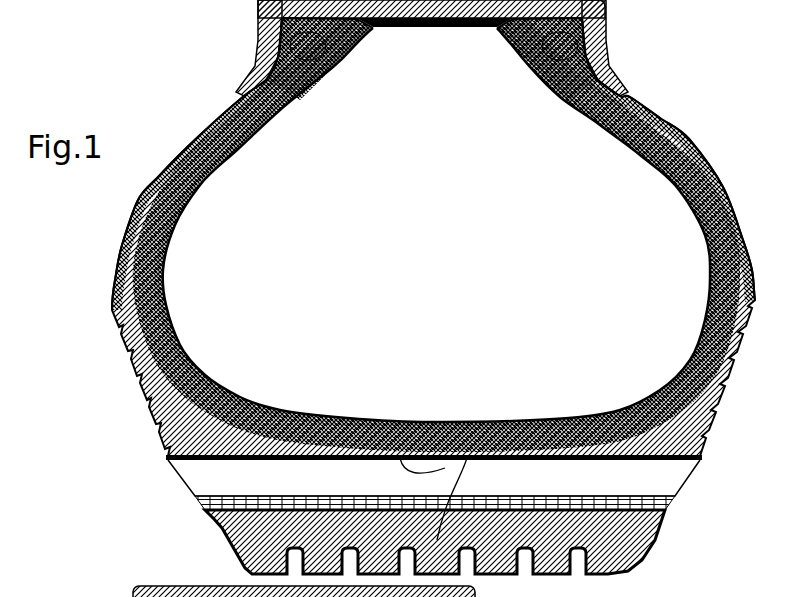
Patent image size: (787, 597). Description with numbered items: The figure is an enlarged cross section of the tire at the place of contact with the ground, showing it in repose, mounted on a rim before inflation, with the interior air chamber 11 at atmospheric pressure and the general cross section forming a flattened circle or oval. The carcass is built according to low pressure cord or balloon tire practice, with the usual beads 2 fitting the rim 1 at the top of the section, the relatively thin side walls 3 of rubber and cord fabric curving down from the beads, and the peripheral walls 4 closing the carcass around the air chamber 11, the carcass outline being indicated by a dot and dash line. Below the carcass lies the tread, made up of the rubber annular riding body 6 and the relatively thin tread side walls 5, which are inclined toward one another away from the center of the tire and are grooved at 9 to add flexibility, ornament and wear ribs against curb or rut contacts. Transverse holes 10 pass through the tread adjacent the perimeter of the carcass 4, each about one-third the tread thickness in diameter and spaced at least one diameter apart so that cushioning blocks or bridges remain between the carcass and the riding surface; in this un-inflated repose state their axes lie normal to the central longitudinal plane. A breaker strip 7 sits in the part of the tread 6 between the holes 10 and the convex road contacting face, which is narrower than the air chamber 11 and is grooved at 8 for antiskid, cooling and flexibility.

The rim 1 is at (258, 13).
The beads 2 is at (282, 51).
The side walls 3 is at (140, 231).
The peripheral walls 4 is at (355, 417).
The side walls of the tread 5 is at (165, 403).
The annular riding body 6 is at (487, 420).
The breaker strip 7 is at (267, 503).
The grooves 8 is at (337, 550).
The grooves 9 is at (170, 450).
The transverse holes 10 is at (434, 499).
The interior air chamber 11 is at (416, 186).